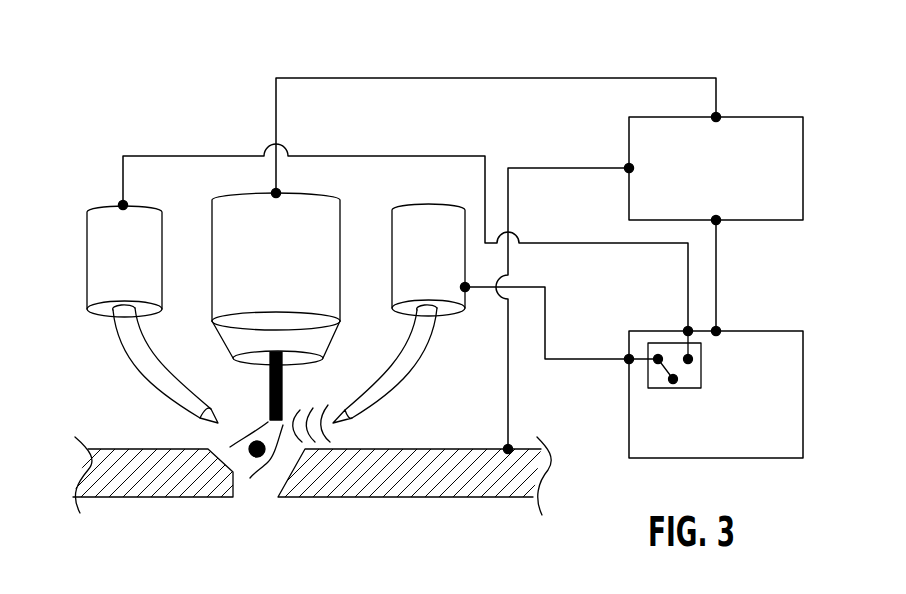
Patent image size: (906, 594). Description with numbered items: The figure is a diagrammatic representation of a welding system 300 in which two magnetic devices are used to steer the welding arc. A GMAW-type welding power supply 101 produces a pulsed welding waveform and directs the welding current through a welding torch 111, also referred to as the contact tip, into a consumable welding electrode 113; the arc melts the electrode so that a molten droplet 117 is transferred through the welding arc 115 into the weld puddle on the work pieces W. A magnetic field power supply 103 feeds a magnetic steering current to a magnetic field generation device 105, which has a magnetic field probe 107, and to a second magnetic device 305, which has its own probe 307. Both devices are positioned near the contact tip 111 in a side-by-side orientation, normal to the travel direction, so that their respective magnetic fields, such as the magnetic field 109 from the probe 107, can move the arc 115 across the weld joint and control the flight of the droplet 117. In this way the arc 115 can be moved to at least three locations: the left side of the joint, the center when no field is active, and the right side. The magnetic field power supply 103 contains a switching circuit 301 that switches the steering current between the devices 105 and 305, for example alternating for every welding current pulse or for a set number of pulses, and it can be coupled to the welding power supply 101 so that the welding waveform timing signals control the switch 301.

The welding system 300 is at (103, 132).
The welding power supply 101 is at (743, 116).
The magnetic field power supply 103 is at (748, 331).
The switching circuit 301 is at (648, 373).
The magnetic field generation device 105 is at (392, 237).
The magnetic field probe 107 is at (404, 378).
The magnetic field 109 is at (316, 407).
The welding torch 111 is at (225, 237).
The welding electrode 113 is at (268, 408).
The welding arc 115 is at (225, 446).
The molten droplet 117 is at (260, 458).
The magnetic device 305 is at (87, 268).
The probe 307 is at (138, 367).
The work pieces W is at (147, 497).